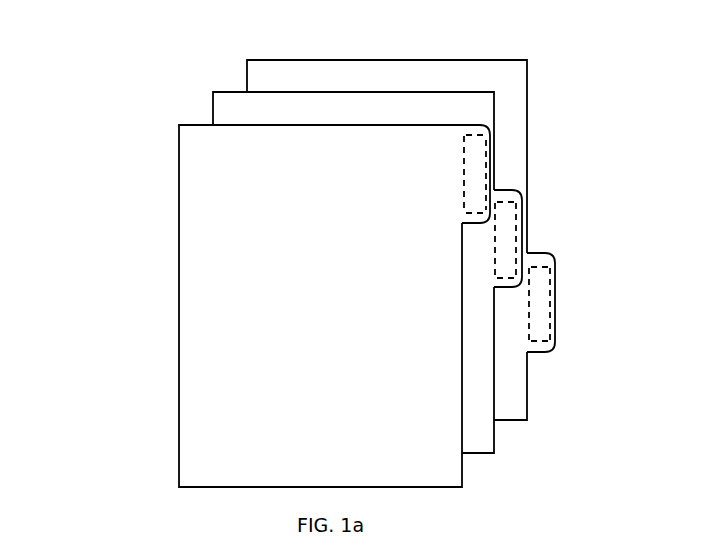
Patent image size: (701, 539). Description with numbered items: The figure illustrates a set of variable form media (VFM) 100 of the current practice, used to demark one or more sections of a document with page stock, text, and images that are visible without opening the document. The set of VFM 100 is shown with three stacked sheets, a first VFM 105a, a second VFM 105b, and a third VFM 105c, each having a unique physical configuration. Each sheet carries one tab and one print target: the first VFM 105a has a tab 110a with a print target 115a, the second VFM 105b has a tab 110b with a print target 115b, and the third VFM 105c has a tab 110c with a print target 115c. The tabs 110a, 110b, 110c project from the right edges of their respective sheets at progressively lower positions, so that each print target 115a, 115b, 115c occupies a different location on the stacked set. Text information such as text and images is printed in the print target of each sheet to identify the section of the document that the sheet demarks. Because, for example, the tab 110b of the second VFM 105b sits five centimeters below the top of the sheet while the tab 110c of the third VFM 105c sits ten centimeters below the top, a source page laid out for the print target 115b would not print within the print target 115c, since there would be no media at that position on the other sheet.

The set of VFM 100 is at (108, 55).
The VFM 105a is at (179, 136).
The VFM 105b is at (213, 105).
The VFM 105c is at (247, 68).
The tab 110a is at (492, 147).
The tab 110b is at (553, 182).
The tab 110c is at (547, 253).
The print target 115a is at (464, 190).
The print target 115b is at (500, 248).
The print target 115c is at (545, 330).